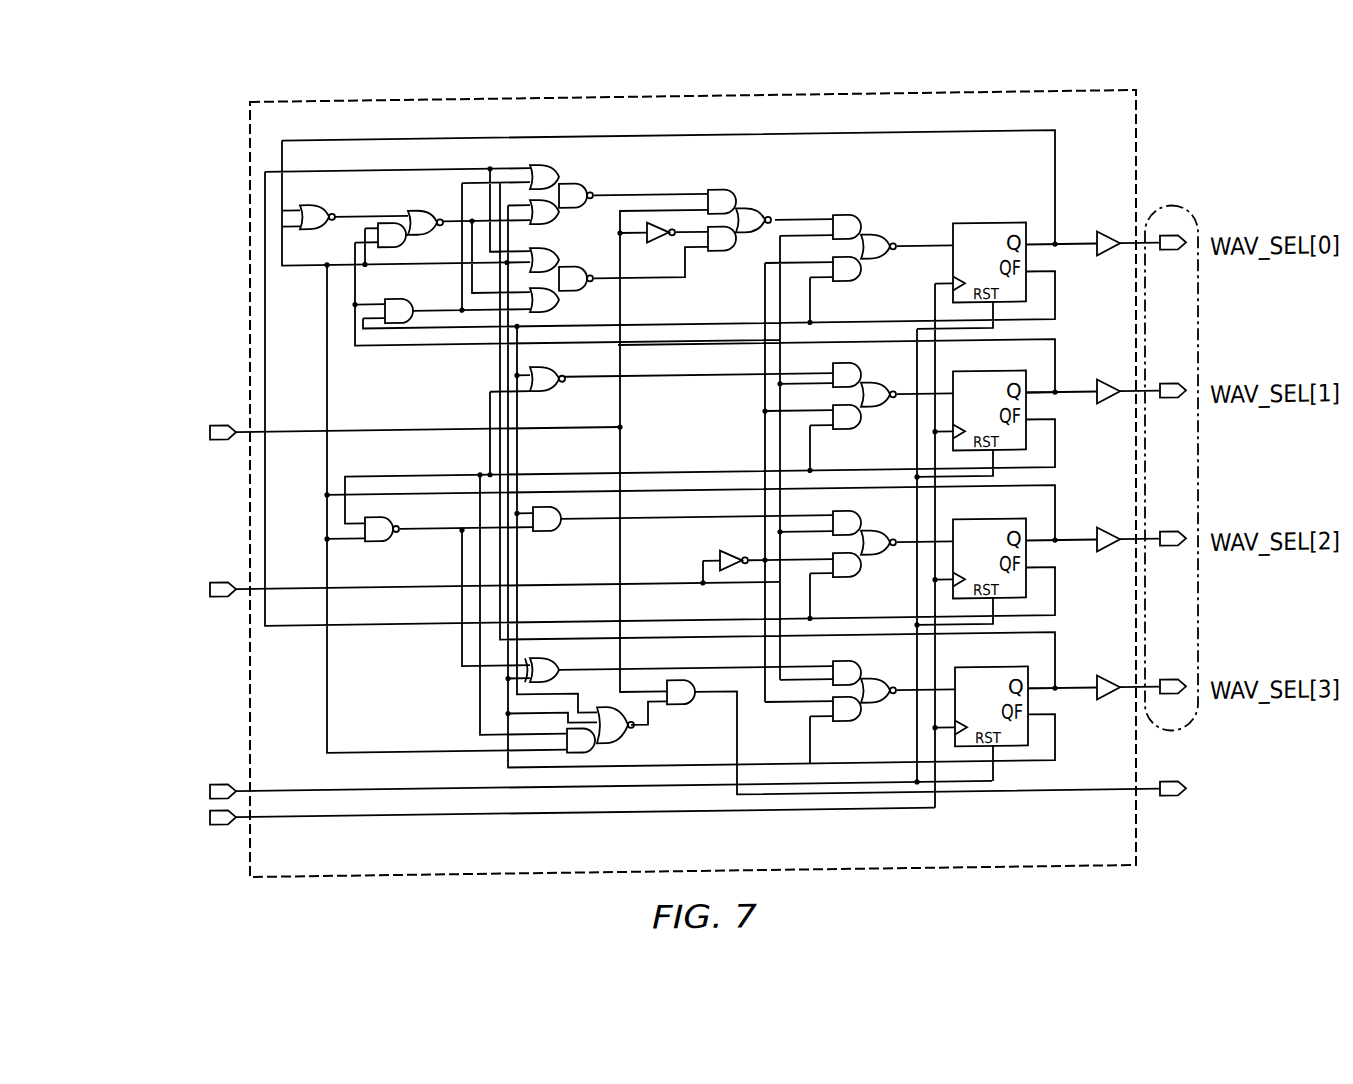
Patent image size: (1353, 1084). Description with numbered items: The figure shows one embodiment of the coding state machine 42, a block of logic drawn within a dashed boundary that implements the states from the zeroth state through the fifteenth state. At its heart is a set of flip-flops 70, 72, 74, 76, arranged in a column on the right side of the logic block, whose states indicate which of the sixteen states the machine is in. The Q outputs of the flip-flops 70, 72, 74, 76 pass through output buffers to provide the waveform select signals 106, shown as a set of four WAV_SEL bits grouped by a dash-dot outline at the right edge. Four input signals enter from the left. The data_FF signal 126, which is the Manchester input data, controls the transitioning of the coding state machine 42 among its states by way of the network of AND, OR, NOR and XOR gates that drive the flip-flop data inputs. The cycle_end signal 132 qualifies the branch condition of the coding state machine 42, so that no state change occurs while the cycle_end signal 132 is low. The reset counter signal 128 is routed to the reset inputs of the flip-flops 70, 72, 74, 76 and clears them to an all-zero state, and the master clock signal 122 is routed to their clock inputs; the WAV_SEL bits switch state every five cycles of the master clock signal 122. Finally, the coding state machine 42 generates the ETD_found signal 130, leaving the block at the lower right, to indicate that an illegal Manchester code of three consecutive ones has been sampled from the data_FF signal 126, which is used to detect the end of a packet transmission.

The coding state machine 42 is at (1136, 145).
The waveform select signals 106 is at (1190, 222).
The flip-flop 70 is at (992, 266).
The flip-flop 72 is at (992, 414).
The flip-flop 74 is at (992, 562).
The flip-flop 76 is at (994, 710).
The data_FF signal 126 is at (234, 425).
The cycle_end signal 132 is at (213, 600).
The reset counter signal 128 is at (209, 793).
The master clock signal 122 is at (301, 820).
The ETD_found signal 130 is at (1070, 801).